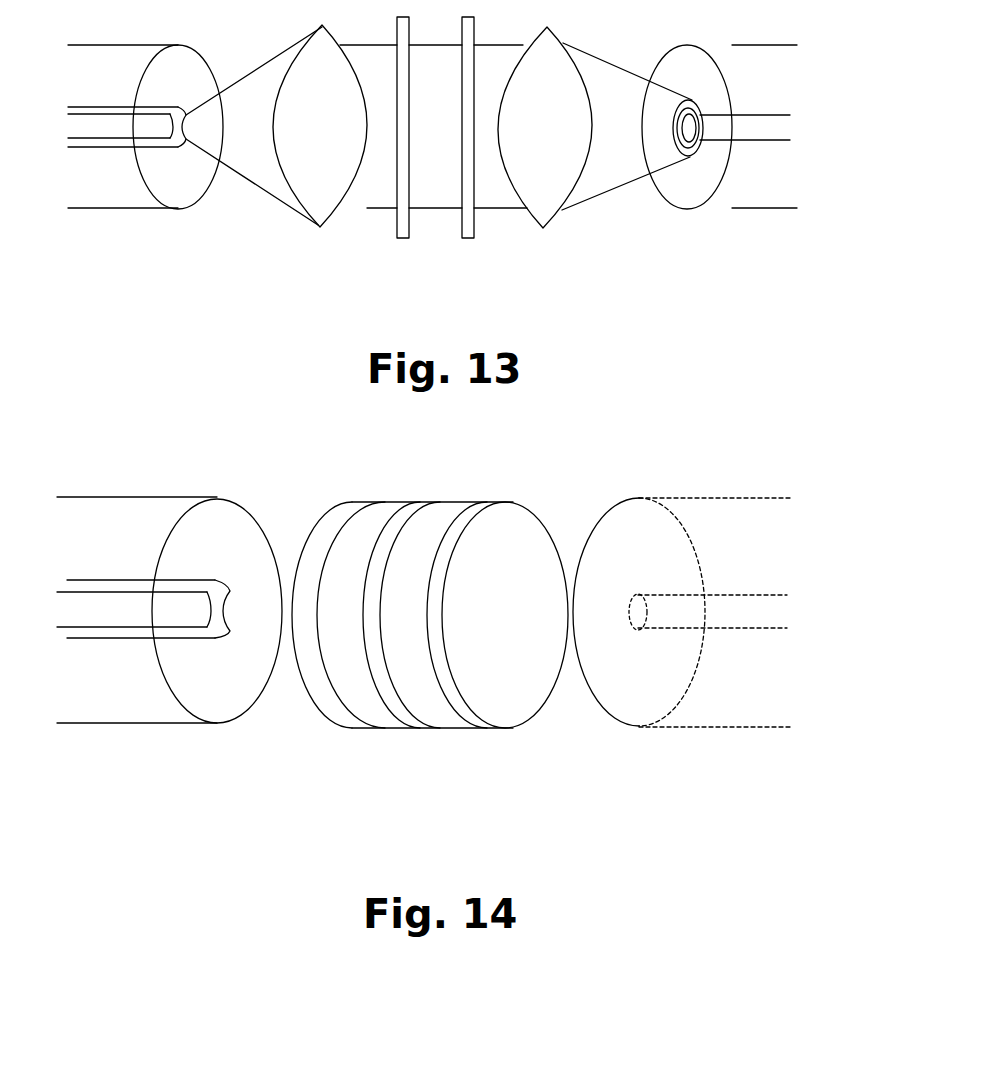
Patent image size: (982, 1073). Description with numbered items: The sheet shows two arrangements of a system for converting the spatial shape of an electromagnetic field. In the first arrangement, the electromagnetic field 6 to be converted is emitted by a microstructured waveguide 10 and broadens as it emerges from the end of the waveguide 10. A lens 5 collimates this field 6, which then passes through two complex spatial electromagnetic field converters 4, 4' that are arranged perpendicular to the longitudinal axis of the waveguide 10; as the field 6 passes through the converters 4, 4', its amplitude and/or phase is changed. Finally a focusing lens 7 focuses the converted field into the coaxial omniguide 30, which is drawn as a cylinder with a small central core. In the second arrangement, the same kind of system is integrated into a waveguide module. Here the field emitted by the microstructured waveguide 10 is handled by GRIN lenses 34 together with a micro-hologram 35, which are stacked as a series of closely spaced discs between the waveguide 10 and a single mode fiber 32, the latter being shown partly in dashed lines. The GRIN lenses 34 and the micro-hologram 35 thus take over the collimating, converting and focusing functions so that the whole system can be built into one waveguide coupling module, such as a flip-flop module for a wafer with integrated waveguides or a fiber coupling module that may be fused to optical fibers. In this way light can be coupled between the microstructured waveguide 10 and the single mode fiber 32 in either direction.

In FIG. 13, the microstructured waveguide 10 is at (100, 190).
In FIG. 14, the microstructured waveguide 10 is at (105, 713).
In FIG. 13, the electromagnetic field 6 is at (257, 172).
In FIG. 13, the lens 5 is at (327, 207).
In FIG. 13, the complex spatial electromagnetic field converter 4 is at (414, 146).
In FIG. 13, the complex spatial electromagnetic field converter 4' is at (484, 145).
In FIG. 13, the focusing lens 7 is at (550, 208).
In FIG. 13, the coaxial omniguide 30 is at (740, 193).
In FIG. 14, the GRIN lenses 34 is at (347, 722).
In FIG. 14, the micro-hologram 35 is at (425, 722).
In FIG. 14, the single mode fiber 32 is at (705, 713).